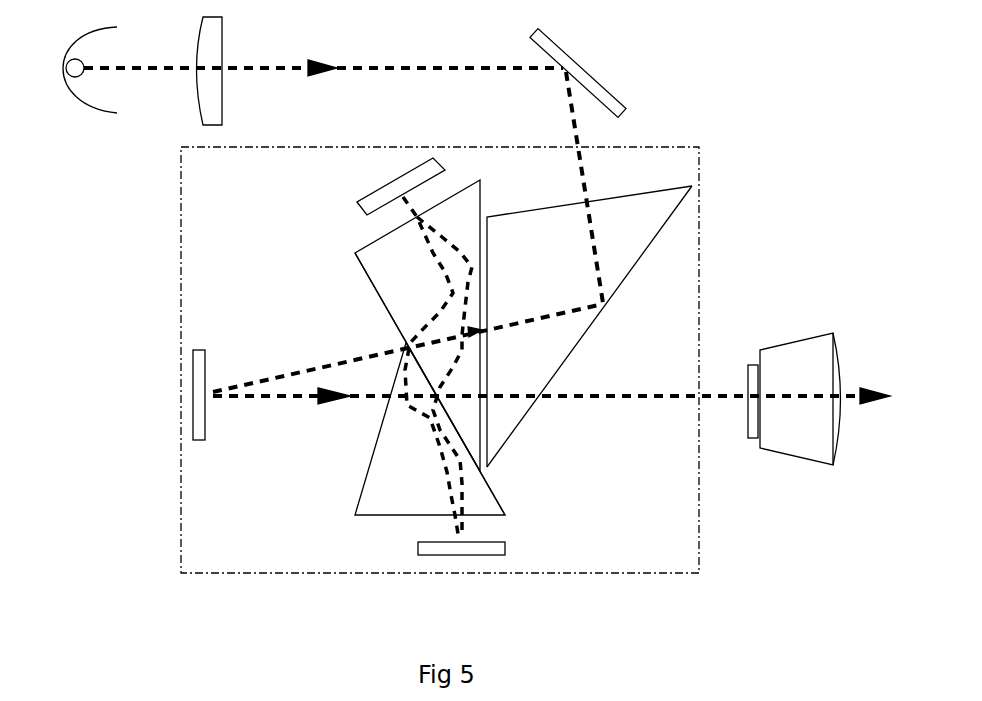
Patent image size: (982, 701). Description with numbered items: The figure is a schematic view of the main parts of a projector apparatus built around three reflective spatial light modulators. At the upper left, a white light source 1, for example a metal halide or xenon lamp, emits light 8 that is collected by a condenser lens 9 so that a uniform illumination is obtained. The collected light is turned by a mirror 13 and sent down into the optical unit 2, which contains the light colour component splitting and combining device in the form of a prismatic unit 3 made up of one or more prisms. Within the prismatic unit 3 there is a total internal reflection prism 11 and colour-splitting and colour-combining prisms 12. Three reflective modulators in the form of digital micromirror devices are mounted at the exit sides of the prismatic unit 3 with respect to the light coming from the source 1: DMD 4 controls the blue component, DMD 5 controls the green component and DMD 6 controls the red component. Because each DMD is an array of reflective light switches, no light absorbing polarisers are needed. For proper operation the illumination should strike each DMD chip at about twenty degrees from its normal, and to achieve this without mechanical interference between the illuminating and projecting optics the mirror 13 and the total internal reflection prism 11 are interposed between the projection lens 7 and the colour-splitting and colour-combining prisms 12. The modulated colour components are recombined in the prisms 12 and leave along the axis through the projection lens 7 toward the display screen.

The white light source 1 is at (80, 100).
The optical unit 2 is at (625, 320).
The prismatic unit 3 is at (378, 347).
The DMD 4 is at (373, 200).
The DMD 5 is at (200, 350).
The DMD 6 is at (500, 548).
The projection lens 7 is at (790, 357).
The light 8 is at (133, 70).
The condenser lens 9 is at (212, 50).
The total internal reflection prism 11 is at (560, 340).
The colour-splitting/colour-combining prisms 12 is at (388, 282).
The mirror 13 is at (558, 53).